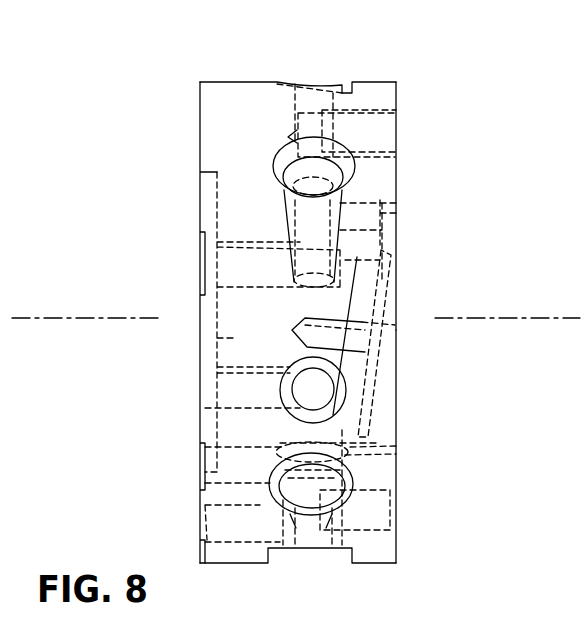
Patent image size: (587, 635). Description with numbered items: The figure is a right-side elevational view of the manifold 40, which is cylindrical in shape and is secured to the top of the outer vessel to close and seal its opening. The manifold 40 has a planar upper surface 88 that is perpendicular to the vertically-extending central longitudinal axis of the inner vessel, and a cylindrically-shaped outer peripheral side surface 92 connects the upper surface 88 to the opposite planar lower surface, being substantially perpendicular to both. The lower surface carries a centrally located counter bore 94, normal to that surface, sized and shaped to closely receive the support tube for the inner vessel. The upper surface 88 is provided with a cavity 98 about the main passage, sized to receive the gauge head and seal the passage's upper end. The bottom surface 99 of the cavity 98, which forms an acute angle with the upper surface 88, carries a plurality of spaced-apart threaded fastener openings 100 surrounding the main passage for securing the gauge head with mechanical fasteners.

The manifold 40 is at (178, 258).
The upper surface 88 is at (397, 93).
The outer peripheral side surface 92 is at (232, 81).
The counter bore 94 is at (197, 340).
The cavity 98 is at (397, 417).
The bottom surface 99 is at (398, 262).
The threaded fastener openings 100 is at (398, 222).